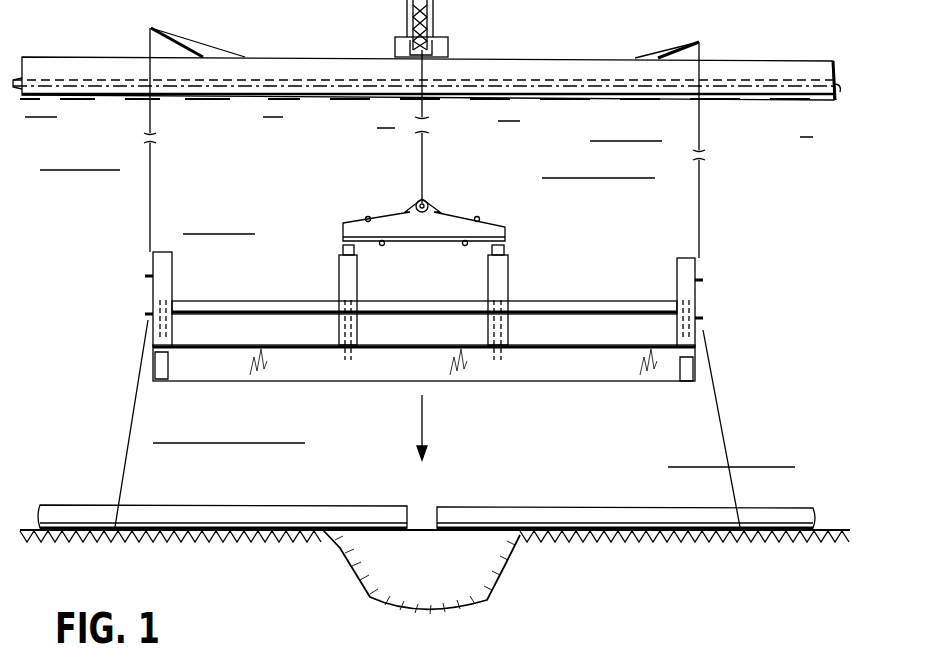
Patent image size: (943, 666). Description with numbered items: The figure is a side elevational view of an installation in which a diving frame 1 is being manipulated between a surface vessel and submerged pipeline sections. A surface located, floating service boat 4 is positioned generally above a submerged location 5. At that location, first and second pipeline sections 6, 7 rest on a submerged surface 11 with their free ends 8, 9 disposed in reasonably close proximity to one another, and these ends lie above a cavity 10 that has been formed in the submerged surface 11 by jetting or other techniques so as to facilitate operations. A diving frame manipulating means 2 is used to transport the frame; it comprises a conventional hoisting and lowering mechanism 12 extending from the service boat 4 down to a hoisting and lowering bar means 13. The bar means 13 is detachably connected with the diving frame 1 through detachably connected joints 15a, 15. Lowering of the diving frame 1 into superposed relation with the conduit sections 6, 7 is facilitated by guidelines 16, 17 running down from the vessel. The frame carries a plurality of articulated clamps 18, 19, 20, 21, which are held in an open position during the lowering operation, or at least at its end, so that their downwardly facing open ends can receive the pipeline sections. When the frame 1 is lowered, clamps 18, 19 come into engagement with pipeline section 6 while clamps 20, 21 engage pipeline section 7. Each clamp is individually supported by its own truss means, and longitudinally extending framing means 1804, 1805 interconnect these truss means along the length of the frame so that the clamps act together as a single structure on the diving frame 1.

The diving frame 1 is at (218, 370).
The diving frame manipulating means 2 is at (420, 162).
The service boat 4 is at (298, 56).
The submerged location 5 is at (493, 596).
The first pipeline section 6 is at (208, 513).
The second pipeline section 7 is at (574, 515).
The free end 8 is at (412, 508).
The free end 9 is at (428, 508).
The cavity 10 is at (398, 572).
The submerged surface 11 is at (633, 545).
The hoisting and lowering mechanism 12 is at (423, 68).
The hoisting and lowering bar means 13 is at (462, 220).
The detachably connected joint 15 is at (500, 250).
The detachably connected joint 15a is at (345, 250).
The guideline 16 is at (150, 107).
The guideline 17 is at (700, 133).
The articulated clamp 18 is at (150, 334).
The articulated clamp 19 is at (345, 362).
The articulated clamp 20 is at (505, 367).
The articulated clamp 21 is at (700, 340).
The longitudinally extending framing means 1804 is at (600, 283).
The longitudinally extending framing means 1805 is at (582, 372).